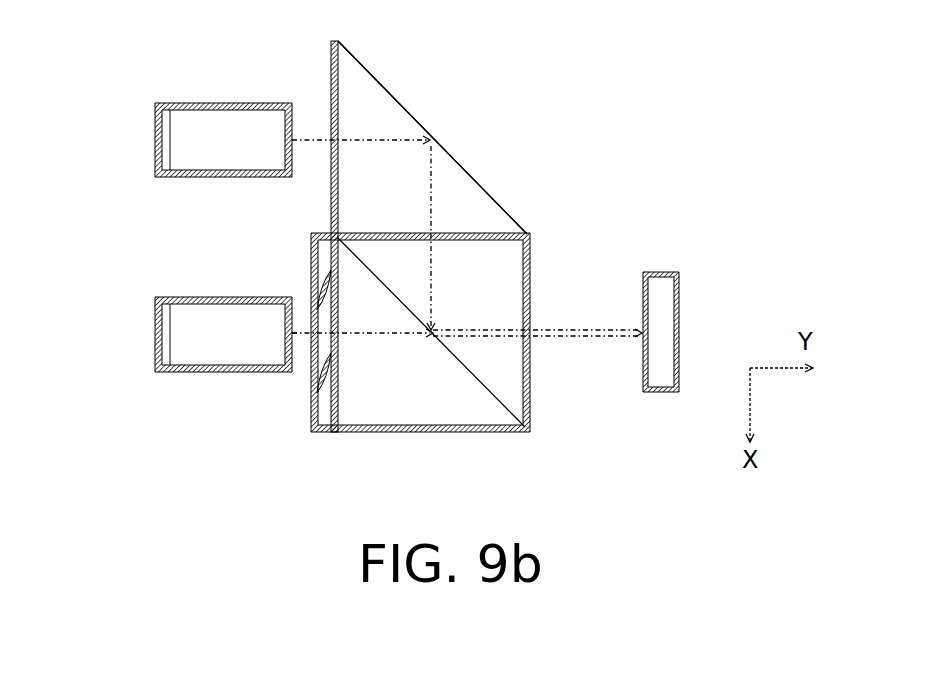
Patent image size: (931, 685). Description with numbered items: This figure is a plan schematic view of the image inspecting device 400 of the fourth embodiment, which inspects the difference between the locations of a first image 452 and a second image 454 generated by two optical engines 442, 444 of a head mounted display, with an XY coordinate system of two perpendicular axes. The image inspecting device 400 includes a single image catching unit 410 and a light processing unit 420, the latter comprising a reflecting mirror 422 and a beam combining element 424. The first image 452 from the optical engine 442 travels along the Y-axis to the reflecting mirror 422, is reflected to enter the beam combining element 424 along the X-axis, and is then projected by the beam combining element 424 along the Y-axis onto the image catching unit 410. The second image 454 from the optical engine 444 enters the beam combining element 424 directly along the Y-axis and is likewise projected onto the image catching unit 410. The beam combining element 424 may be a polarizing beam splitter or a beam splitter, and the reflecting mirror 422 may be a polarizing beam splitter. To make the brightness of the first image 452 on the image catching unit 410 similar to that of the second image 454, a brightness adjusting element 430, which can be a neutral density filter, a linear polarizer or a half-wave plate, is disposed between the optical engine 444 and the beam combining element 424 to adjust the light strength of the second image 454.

The image inspecting device 400 is at (678, 440).
The image catching unit 410 is at (680, 332).
The light processing unit 420 is at (460, 159).
The reflecting mirror 422 is at (392, 98).
The beam combining element 424 is at (478, 382).
The brightness adjusting element 430 is at (326, 412).
The optical engine 442 is at (152, 138).
The optical engine 444 is at (152, 332).
The first image 452 is at (308, 137).
The second image 454 is at (297, 328).